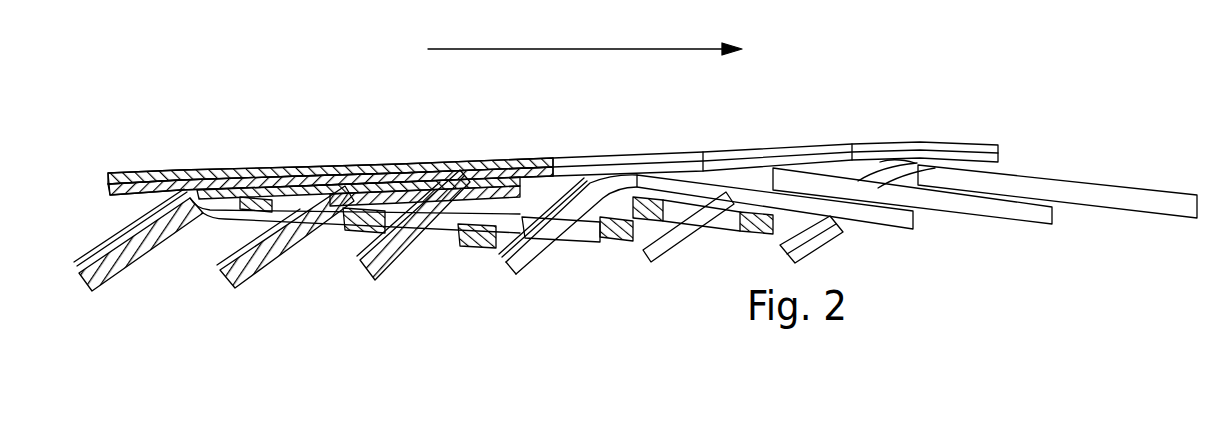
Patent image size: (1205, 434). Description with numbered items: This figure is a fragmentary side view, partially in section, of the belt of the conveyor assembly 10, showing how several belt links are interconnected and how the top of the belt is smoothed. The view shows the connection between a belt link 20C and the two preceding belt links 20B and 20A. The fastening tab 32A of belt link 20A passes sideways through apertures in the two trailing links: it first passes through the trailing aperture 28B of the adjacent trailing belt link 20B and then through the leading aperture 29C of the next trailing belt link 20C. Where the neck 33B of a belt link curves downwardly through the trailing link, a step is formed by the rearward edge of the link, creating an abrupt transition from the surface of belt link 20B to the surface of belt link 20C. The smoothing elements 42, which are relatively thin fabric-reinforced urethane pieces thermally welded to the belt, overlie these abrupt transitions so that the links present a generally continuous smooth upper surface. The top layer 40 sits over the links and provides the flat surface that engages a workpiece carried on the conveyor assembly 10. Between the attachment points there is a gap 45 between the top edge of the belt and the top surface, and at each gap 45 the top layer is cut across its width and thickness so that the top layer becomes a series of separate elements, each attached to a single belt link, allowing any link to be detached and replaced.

The conveyor assembly 10 is at (929, 114).
The top layer 40 is at (872, 136).
The smoothing elements 42 is at (473, 158).
The gap 45 is at (290, 207).
The belt link 20A is at (617, 193).
The belt link 20B is at (363, 280).
The belt link 20C is at (250, 270).
The trailing aperture 28B is at (618, 243).
The leading aperture 29C is at (583, 240).
The fastening tab 32A is at (502, 278).
The neck 33B is at (447, 232).